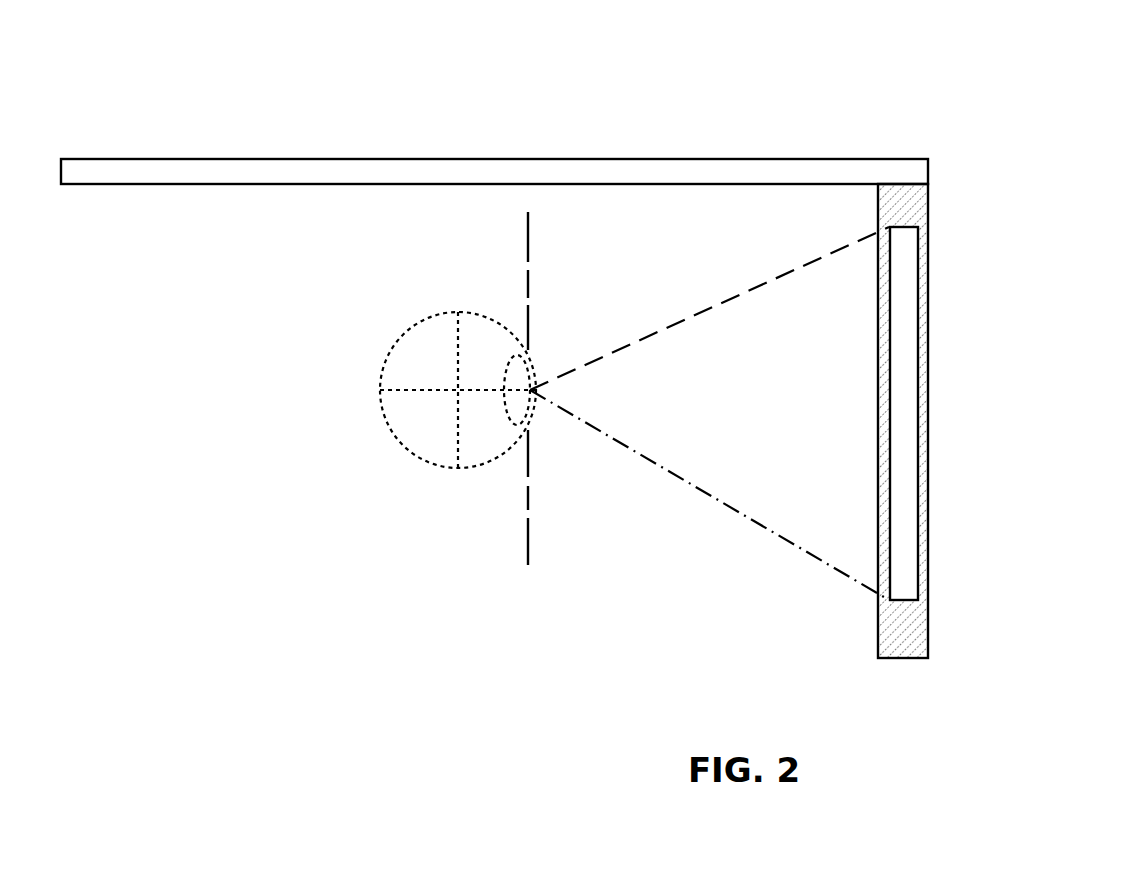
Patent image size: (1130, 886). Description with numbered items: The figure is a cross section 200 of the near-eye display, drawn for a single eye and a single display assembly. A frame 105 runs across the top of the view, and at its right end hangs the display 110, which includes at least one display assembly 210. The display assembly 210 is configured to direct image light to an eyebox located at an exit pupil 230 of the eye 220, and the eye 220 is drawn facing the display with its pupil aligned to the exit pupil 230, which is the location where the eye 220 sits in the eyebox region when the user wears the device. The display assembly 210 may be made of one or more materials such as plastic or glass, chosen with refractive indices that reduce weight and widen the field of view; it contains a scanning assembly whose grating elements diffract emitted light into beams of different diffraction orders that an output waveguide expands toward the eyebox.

The cross section 200 is at (195, 61).
The frame 105 is at (784, 159).
The display assembly 210 is at (898, 301).
The display 110 is at (928, 534).
The eye 220 is at (419, 322).
The exit pupil 230 is at (526, 487).